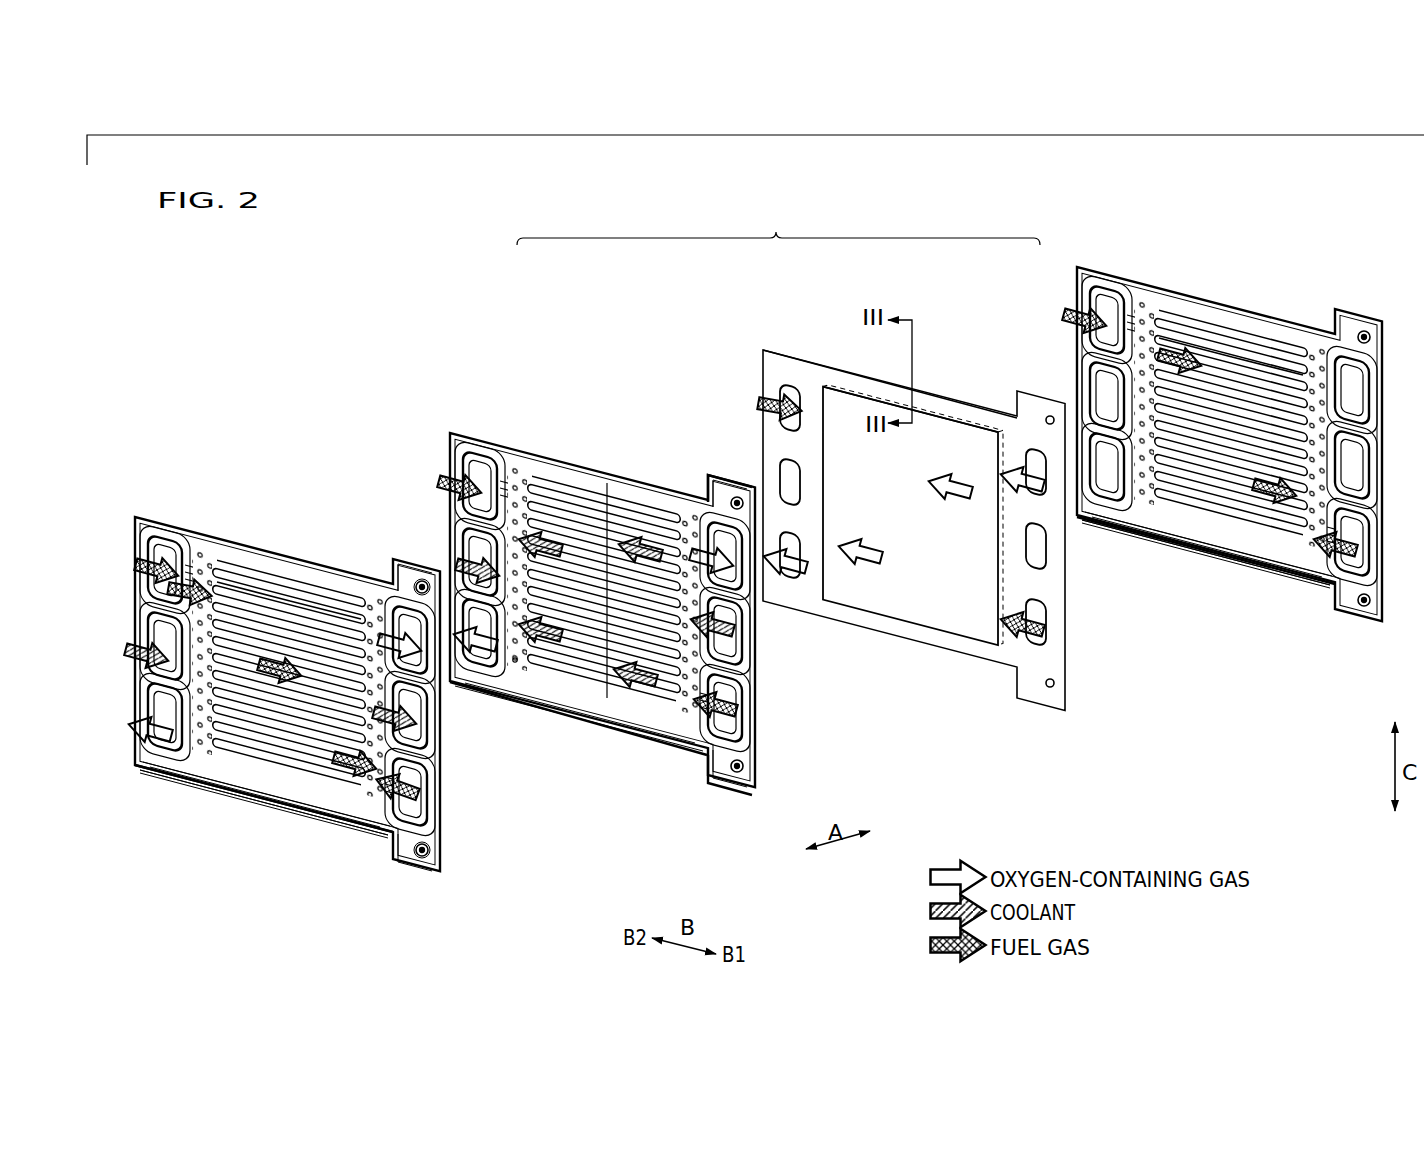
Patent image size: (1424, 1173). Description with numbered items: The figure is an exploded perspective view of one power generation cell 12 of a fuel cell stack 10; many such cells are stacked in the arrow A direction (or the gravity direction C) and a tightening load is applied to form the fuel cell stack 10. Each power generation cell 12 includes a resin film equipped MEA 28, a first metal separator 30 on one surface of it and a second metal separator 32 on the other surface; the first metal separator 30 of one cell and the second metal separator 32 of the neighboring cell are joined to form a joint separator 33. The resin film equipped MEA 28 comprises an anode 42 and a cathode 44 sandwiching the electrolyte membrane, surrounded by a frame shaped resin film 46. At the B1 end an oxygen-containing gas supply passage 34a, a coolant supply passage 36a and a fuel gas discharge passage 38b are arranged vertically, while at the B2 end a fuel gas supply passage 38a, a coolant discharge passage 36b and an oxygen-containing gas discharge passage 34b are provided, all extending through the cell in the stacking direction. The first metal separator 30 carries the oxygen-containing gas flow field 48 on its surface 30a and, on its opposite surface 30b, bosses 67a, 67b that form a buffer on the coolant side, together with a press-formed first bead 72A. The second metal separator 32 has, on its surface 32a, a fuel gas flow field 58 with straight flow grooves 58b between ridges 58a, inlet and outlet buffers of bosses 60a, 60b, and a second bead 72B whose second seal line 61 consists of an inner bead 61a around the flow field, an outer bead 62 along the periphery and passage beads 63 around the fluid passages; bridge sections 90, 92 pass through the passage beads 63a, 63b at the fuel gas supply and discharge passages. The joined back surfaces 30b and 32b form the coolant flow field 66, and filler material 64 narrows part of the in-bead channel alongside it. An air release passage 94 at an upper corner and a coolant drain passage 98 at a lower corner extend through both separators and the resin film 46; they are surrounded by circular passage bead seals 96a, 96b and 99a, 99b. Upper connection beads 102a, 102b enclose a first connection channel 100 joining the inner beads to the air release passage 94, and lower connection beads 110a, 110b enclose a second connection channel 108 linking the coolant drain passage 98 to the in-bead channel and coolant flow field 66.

The fuel cell stack 10 is at (354, 247).
The power generation cell 12 is at (778, 230).
The resin film equipped MEA 28 is at (762, 346).
The first metal separator 30 is at (516, 446).
The second metal separator 32 is at (135, 512).
The joint separator 33 is at (350, 437).
The oxygen-containing gas supply passage 34a is at (397, 583).
The oxygen-containing gas discharge passage 34b is at (153, 760).
The coolant supply passage 36a is at (428, 765).
The coolant discharge passage 36b is at (1105, 392).
The fuel gas supply passage 38a is at (1103, 305).
The fuel gas discharge passage 38b is at (410, 833).
The anode 42 is at (840, 388).
The cathode 44 is at (855, 440).
The resin film 46 is at (807, 368).
The oxygen-containing gas flow field 48 is at (578, 497).
The fuel gas flow field 58 is at (298, 502).
The ridges 58a is at (232, 575).
The straight flow grooves 58b is at (275, 583).
The bosses 60a is at (210, 755).
The bosses 60b is at (377, 805).
The second seal line 61 is at (295, 808).
The inner bead 61a is at (228, 789).
The outer bead 62 is at (253, 773).
The passage beads 63 is at (123, 622).
The passage bead 63a is at (150, 552).
The passage bead 63b is at (430, 835).
The filler material 64 is at (604, 483).
The coolant flow field 66 is at (547, 490).
The bosses 67a is at (692, 662).
The bosses 67b is at (515, 662).
The first bead 72A is at (565, 710).
The second bead 72B is at (227, 790).
The bridge section 90 is at (182, 568).
The bridge section 92 is at (392, 817).
The air release passage 94 is at (425, 580).
The passage bead seal 96a is at (737, 498).
The passage bead seal 96b is at (423, 580).
The coolant drain passage 98 is at (427, 852).
The passage bead seal 99a is at (742, 797).
The passage bead seal 99b is at (427, 857).
The first connection channel 100 is at (708, 490).
The upper connection bead 102a is at (720, 493).
The upper connection bead 102b is at (399, 600).
The second connection channel 108 is at (723, 763).
The lower connection bead 110a is at (707, 773).
The lower connection bead 110b is at (405, 823).
The surface of first metal separator 30a is at (587, 707).
The surface of first metal separator 30b is at (620, 712).
The surface of second metal separator 32a is at (315, 807).
The surface of second metal separator 32b is at (323, 800).